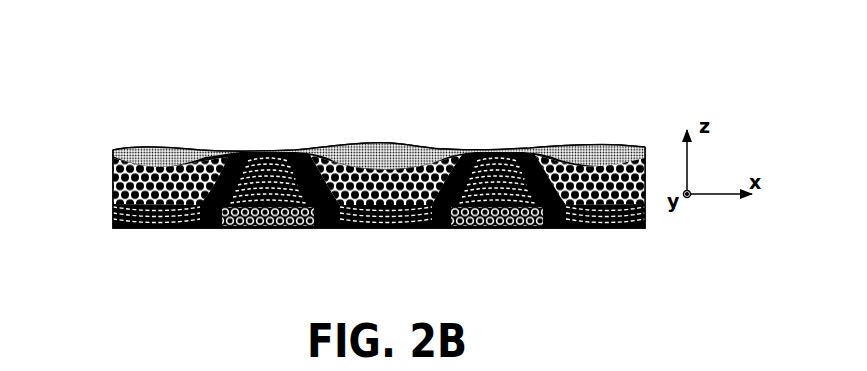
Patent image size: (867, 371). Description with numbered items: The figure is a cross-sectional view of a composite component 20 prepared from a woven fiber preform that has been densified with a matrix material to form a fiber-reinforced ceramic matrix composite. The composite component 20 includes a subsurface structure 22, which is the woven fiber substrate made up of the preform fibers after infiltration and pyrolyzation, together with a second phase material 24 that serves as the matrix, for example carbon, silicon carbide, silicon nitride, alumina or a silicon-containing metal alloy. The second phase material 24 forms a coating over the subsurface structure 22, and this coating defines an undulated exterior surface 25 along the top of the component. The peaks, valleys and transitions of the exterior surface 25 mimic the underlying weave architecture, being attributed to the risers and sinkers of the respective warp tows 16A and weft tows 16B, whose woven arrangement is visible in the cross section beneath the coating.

The composite component 20 is at (616, 75).
The subsurface structure 22 is at (130, 149).
The warp tows 16A is at (184, 151).
The weft tows 16B is at (297, 151).
The second phase material 24 is at (381, 153).
The undulated exterior surface 25 is at (447, 146).